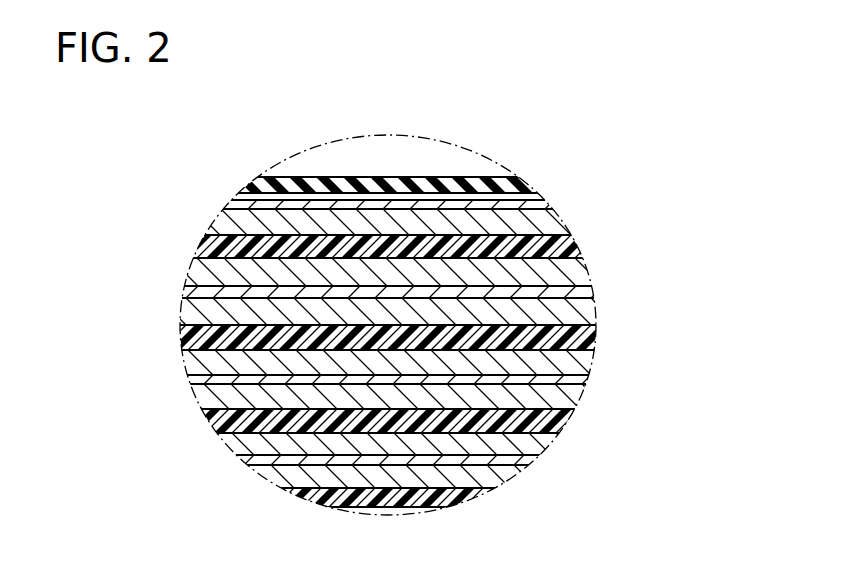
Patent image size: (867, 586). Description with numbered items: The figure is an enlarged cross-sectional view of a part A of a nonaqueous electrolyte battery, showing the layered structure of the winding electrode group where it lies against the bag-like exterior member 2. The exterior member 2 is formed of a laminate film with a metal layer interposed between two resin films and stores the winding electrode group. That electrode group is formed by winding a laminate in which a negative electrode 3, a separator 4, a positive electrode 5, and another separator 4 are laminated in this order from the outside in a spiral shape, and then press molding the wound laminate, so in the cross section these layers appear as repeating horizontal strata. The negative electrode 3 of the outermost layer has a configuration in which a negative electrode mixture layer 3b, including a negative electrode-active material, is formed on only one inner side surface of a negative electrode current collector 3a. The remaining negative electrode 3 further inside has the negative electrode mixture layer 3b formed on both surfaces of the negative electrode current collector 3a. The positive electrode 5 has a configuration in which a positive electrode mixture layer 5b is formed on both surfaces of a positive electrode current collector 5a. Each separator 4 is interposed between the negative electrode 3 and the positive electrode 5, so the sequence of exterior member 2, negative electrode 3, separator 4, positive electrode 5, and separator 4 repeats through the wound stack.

The part A is at (318, 146).
The bag-like exterior member 2 is at (513, 181).
The negative electrode 3 is at (652, 163).
The negative electrode current collector 3a is at (537, 207).
The negative electrode mixture layer 3b is at (560, 221).
The separator 4 is at (213, 231).
The positive electrode 5 is at (680, 238).
The positive electrode current collector 5a is at (578, 297).
The positive electrode mixture layer 5b is at (577, 272).